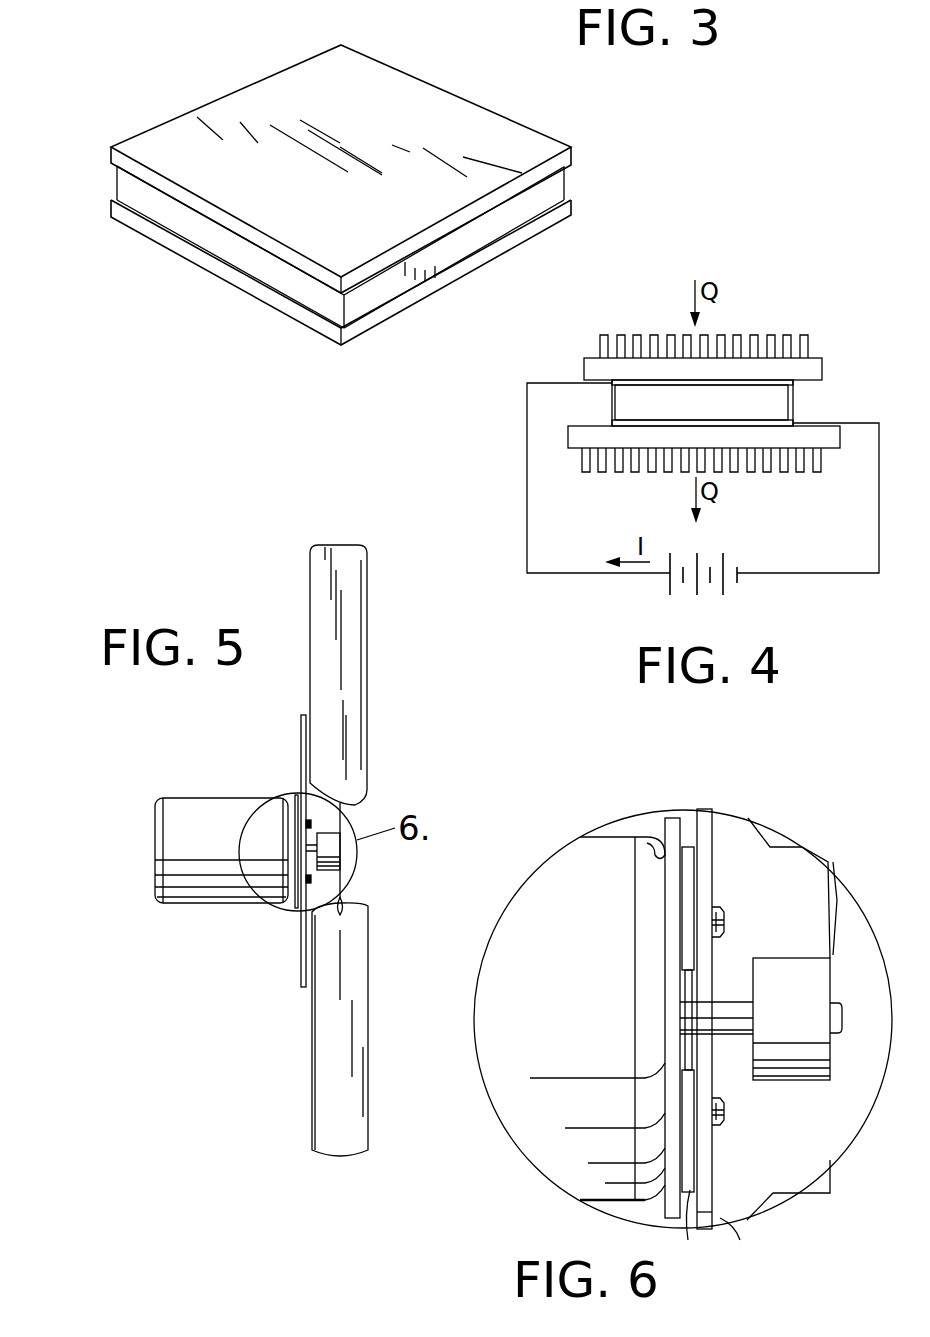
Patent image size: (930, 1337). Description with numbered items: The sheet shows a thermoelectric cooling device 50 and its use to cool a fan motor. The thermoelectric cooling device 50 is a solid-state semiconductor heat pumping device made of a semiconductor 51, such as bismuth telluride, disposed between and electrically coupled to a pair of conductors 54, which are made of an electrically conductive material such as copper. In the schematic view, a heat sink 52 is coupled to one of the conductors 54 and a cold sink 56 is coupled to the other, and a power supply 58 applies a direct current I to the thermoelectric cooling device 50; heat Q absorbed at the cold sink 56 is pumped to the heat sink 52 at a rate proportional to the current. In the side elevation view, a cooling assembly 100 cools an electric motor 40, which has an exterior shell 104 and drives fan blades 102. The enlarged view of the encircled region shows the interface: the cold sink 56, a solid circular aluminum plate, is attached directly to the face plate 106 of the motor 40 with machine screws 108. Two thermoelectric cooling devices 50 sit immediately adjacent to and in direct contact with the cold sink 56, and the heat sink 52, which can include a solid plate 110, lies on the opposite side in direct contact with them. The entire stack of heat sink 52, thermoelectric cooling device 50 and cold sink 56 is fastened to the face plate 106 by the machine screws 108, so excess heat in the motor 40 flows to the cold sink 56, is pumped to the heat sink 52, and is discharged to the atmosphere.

In FIG. 5, the electric motor 40 is at (155, 868).
In FIG. 6, the electric motor 40 is at (545, 870).
In FIG. 3, the thermoelectric cooling device 50 is at (512, 115).
In FIG. 4, the thermoelectric cooling device 50 is at (800, 402).
In FIG. 6, the thermoelectric cooling device 50 is at (690, 847).
In FIG. 3, the semiconductor 51 is at (552, 190).
In FIG. 4, the semiconductor 51 is at (738, 402).
In FIG. 4, the heat sink 52 is at (828, 452).
In FIG. 5, the heat sink 52 is at (301, 971).
In FIG. 6, the heat sink 52 is at (710, 808).
In FIG. 3, the conductors 54 is at (570, 156).
In FIG. 4, the conductors 54 is at (612, 422).
In FIG. 4, the cold sink 56 is at (813, 357).
In FIG. 6, the cold sink 56 is at (677, 823).
In FIG. 4, the power supply 58 is at (745, 607).
In FIG. 5, the cooling assembly 100 is at (284, 780).
In FIG. 5, the fan blades 102 is at (368, 610).
In FIG. 5, the exterior shell 104 is at (212, 903).
In FIG. 6, the exterior shell 104 is at (602, 835).
In FIG. 6, the face plate 106 is at (660, 835).
In FIG. 6, the machine screws 108 is at (725, 917).
In FIG. 6, the solid plate 110 is at (713, 1212).